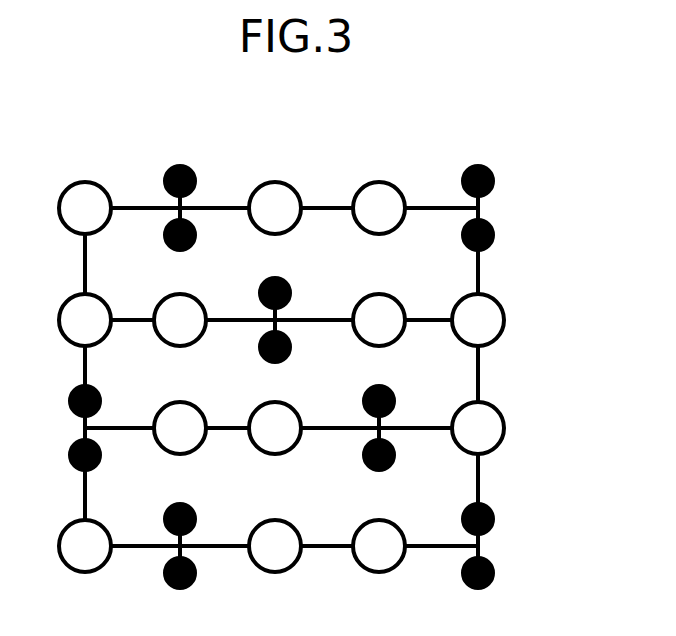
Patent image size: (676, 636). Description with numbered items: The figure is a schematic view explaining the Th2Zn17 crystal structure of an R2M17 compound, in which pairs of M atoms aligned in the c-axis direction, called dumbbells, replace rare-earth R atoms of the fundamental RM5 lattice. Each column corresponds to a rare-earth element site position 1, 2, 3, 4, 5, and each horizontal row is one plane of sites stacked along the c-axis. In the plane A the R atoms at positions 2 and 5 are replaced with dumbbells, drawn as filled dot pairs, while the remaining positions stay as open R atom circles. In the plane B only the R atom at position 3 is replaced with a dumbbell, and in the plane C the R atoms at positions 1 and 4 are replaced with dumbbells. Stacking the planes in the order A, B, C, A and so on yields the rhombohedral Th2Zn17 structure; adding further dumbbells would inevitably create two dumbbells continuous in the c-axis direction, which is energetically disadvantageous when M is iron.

The rare-earth element site position 1 is at (85, 347).
The rare-earth element site position 2 is at (180, 355).
The rare-earth element site position 3 is at (275, 347).
The rare-earth element site position 4 is at (379, 347).
The rare-earth element site position 5 is at (478, 355).
The plane A is at (322, 377).
The plane B is at (322, 320).
The plane C is at (322, 428).